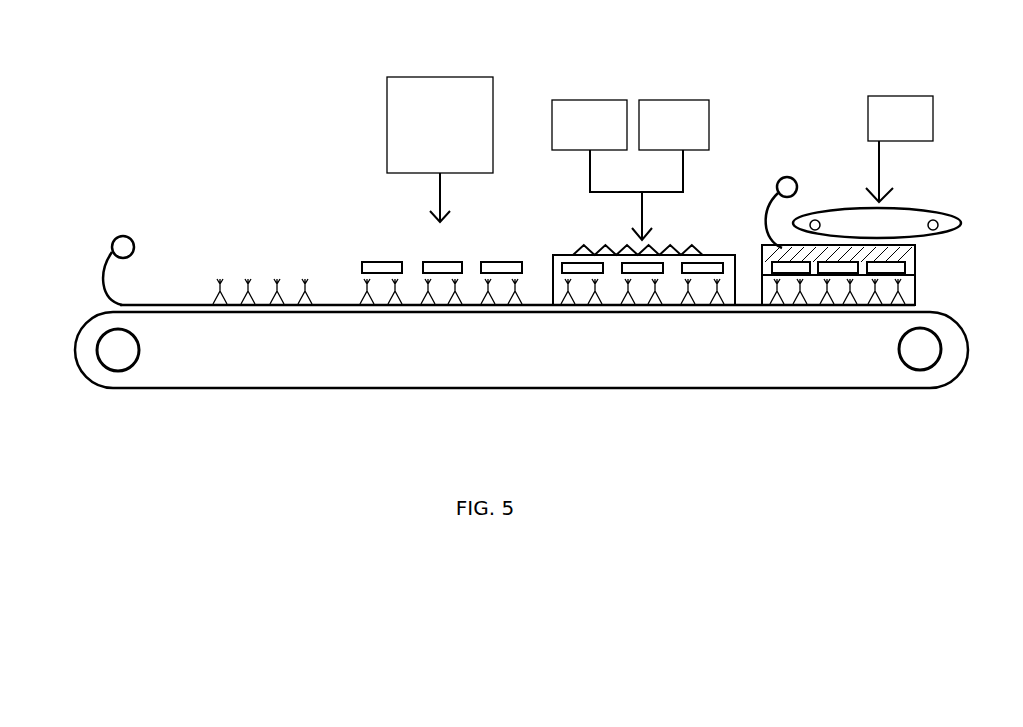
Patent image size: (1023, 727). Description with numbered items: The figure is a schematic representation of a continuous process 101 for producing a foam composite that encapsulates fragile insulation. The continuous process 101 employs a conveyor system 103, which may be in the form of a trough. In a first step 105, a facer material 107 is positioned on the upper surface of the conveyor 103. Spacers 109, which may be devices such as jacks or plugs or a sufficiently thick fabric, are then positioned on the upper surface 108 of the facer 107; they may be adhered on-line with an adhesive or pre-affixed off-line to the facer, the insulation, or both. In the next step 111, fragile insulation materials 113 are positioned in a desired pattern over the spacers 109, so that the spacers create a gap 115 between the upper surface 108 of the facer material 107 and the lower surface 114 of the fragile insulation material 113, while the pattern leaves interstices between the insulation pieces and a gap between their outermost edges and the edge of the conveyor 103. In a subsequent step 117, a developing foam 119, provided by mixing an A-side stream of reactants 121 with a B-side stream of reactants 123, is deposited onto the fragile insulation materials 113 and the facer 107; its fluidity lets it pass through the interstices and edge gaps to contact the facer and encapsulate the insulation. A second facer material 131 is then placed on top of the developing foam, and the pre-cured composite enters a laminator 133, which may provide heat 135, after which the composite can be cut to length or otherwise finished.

The continuous process 101 is at (303, 467).
The conveyor system 103 is at (232, 393).
The first step 105 is at (118, 228).
The facer material 107 is at (77, 290).
The upper surface of facer 108 is at (157, 302).
The spacers 109 is at (287, 272).
The step of positioning fragile insulation materials 111 is at (440, 134).
The fragile insulation materials 113 is at (452, 263).
The lower surface of fragile insulation material 114 is at (362, 276).
The gap 115 is at (523, 292).
The step of depositing developing foam 117 is at (636, 120).
The developing foam 119 is at (655, 240).
The A-side stream of reactants 121 is at (575, 90).
The B-side stream of reactants 123 is at (680, 85).
The facer material 131 is at (780, 172).
The laminator 133 is at (942, 215).
The heat 135 is at (921, 92).